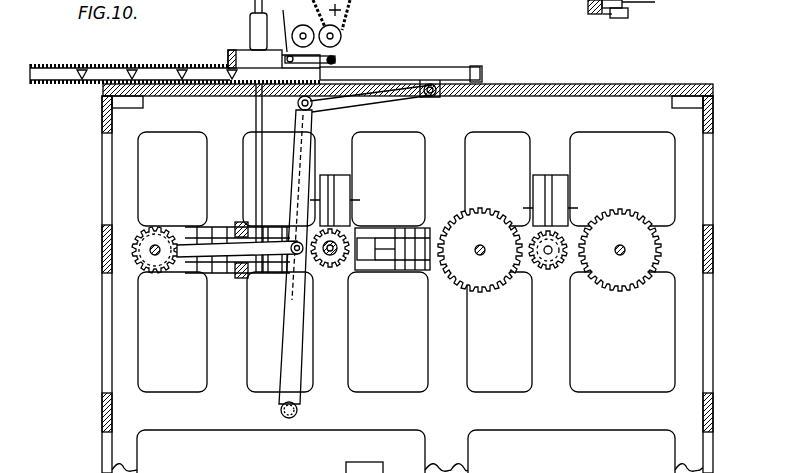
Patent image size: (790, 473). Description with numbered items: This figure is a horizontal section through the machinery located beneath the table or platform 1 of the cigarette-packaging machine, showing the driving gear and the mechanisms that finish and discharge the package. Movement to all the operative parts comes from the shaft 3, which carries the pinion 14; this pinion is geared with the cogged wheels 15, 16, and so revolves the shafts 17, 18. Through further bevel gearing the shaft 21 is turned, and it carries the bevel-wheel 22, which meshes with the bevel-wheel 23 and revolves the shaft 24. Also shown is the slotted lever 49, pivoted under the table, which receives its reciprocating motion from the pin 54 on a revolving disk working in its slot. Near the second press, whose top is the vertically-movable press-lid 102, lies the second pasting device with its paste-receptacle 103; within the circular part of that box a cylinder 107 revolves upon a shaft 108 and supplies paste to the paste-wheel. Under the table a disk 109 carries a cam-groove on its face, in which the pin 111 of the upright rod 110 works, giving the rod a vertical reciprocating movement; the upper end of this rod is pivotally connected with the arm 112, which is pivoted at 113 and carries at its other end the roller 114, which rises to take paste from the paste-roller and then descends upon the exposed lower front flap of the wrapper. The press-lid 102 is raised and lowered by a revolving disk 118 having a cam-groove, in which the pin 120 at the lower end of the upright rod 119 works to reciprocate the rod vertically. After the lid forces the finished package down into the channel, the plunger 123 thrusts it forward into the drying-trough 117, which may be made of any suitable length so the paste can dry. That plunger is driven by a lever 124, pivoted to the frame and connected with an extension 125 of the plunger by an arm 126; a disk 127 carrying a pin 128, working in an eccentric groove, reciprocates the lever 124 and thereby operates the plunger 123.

The table or platform 1 is at (703, 330).
The shaft 3 is at (528, 267).
The pinion 14 is at (547, 277).
The cogged wheel 15 is at (620, 250).
The cogged wheel 16 is at (480, 250).
The shaft 17 is at (620, 256).
The shaft 18 is at (478, 256).
The shaft 21 is at (386, 250).
The bevel-wheel 22 is at (360, 227).
The bevel-wheel 23 is at (334, 266).
The shaft 24 is at (328, 264).
The lever 49 is at (588, 7).
The pin 54 is at (603, 15).
The press-lid 102 is at (240, 50).
The paste-receptacle 103 is at (447, 462).
The cylinder 107 is at (340, 33).
The shaft 108 is at (300, 28).
The disk 109 is at (285, 270).
The upright rod 110 is at (302, 135).
The pin 111 is at (295, 237).
The arm 112 is at (314, 104).
The pivot 113 is at (337, 58).
The roller 114 is at (282, 26).
The drying-trough 117 is at (58, 74).
The revolving disk 118 is at (238, 226).
The upright rod 119 is at (256, 113).
The pin 120 is at (240, 277).
The plunger 123 is at (373, 72).
The lever 124 is at (293, 336).
The extension 125 is at (437, 97).
The arm 126 is at (345, 103).
The disk 127 is at (162, 275).
The pin 128 is at (157, 242).